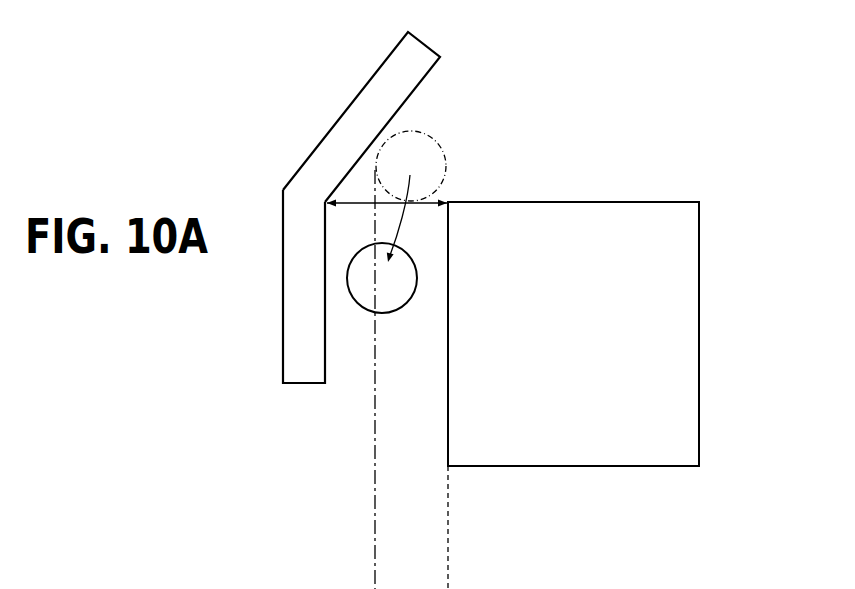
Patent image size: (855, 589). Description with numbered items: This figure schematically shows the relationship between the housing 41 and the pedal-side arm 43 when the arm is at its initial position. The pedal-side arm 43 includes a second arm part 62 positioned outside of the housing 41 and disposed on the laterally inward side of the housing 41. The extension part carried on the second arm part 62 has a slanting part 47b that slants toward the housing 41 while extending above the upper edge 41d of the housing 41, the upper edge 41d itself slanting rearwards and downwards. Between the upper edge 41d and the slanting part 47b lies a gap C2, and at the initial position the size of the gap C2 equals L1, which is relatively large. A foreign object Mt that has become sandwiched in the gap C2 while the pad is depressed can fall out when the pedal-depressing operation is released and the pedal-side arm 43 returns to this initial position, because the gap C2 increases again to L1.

The second arm part 62 is at (262, 294).
The pedal-side arm 43 is at (280, 308).
The slanting part 47b is at (347, 135).
The housing 41 is at (702, 344).
The upper edge 41d is at (450, 197).
The size of the gap at the initial time L1 is at (358, 205).
The foreign object Mt is at (433, 135).
The gap C2 is at (422, 229).